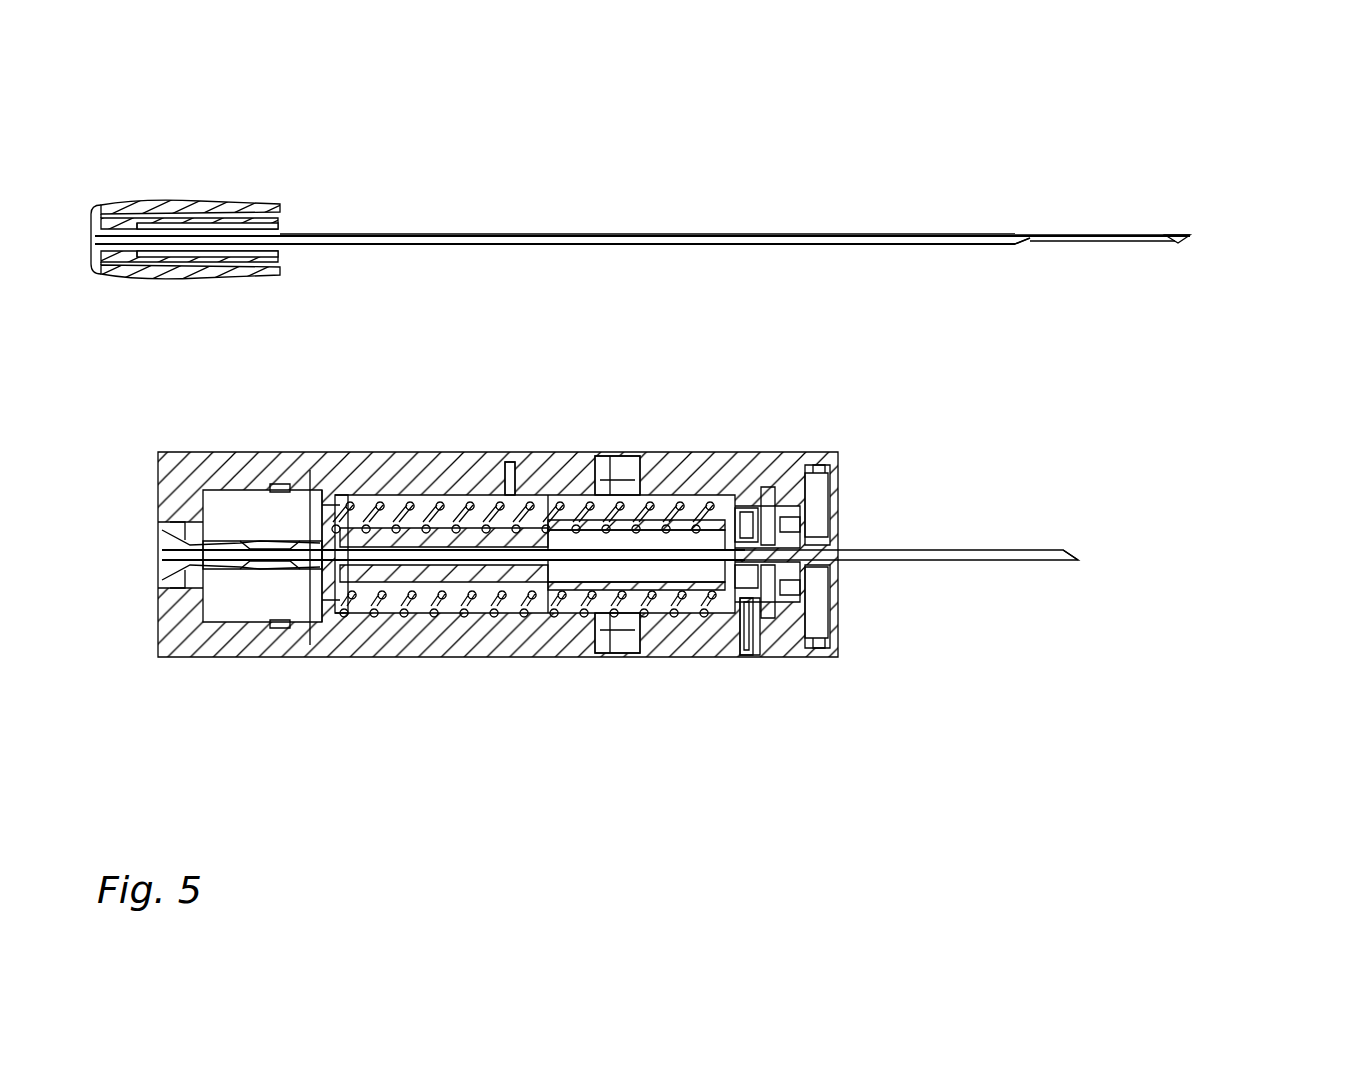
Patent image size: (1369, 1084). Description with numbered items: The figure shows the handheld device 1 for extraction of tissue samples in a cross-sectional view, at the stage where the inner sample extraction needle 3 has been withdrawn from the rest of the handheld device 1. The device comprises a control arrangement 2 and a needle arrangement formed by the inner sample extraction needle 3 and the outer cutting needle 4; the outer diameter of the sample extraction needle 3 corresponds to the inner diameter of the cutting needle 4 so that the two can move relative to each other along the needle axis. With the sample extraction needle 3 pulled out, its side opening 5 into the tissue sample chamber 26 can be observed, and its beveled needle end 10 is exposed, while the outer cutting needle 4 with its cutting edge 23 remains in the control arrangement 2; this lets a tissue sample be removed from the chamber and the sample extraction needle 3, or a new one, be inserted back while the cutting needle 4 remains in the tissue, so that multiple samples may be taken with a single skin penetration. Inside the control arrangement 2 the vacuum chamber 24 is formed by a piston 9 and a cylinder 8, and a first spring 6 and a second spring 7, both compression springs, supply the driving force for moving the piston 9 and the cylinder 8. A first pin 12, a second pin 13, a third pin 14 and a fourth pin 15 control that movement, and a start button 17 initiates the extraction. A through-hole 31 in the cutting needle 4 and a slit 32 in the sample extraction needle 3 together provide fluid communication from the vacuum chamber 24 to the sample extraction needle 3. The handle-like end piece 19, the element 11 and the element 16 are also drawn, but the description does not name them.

The handheld device 1 is at (1172, 697).
The control arrangement 2 is at (252, 452).
The inner sample extraction needle 3 is at (830, 240).
The outer cutting needle 4 is at (870, 552).
The side opening 5 is at (1085, 248).
The first spring 6 is at (515, 452).
The second spring 7 is at (446, 657).
The cylinder 8 is at (727, 452).
The piston 9 is at (520, 657).
The beveled needle end 10 is at (1185, 245).
The stylet holder 11 is at (245, 585).
The first pin 12 is at (313, 657).
The second pin 13 is at (612, 657).
The third pin 14 is at (313, 452).
The fourth pin 15 is at (610, 452).
The spring seat 16 is at (345, 452).
The start button 17 is at (749, 657).
The handle 19 is at (102, 215).
The cutting edge 23 is at (1062, 548).
The vacuum chamber 24 is at (560, 452).
The tissue sample chamber 26 is at (1063, 237).
The through-hole 31 is at (530, 452).
The slit 32 is at (535, 236).